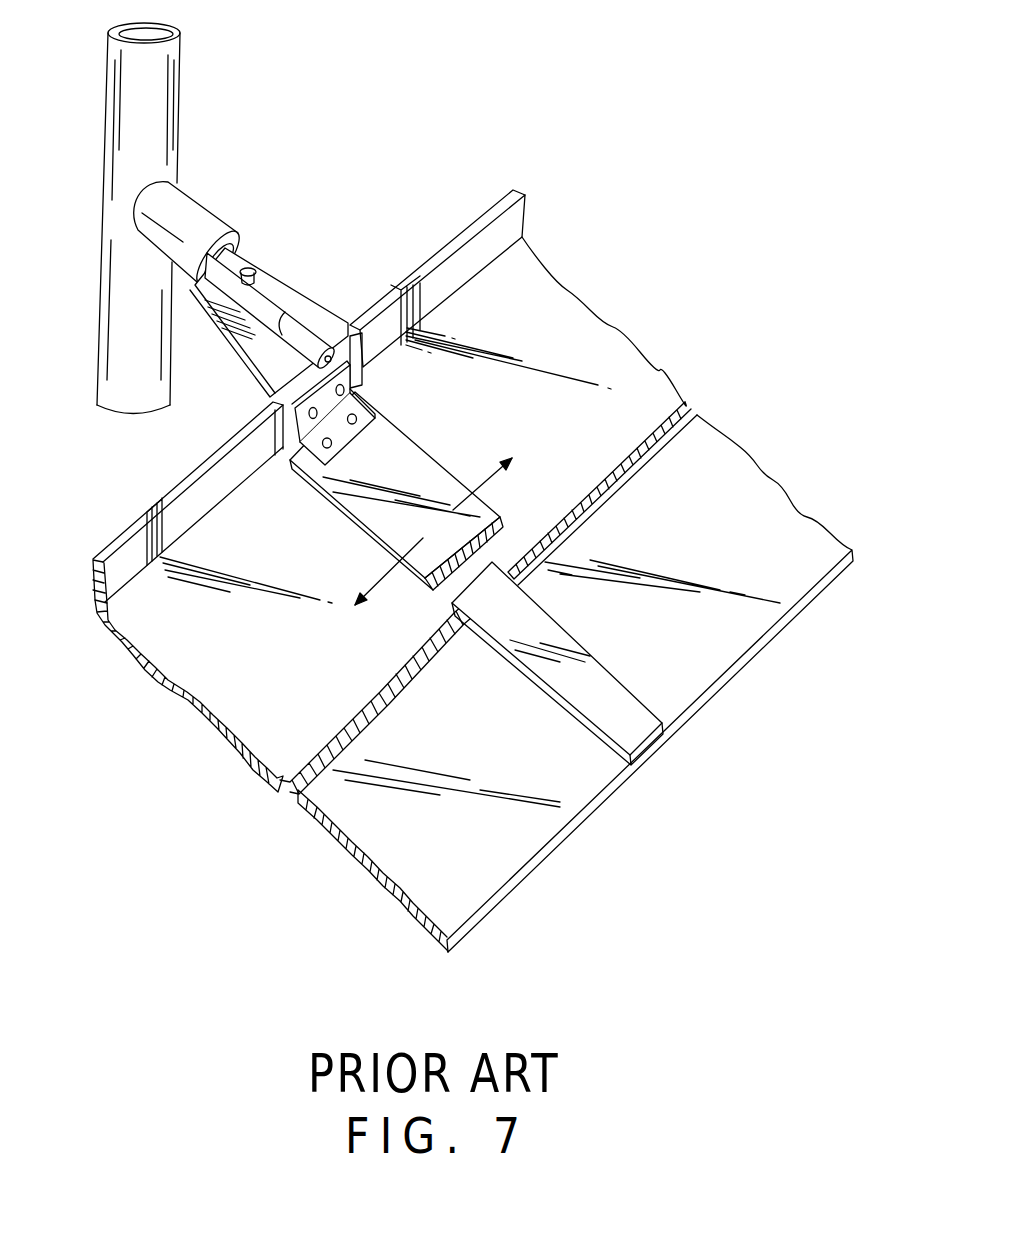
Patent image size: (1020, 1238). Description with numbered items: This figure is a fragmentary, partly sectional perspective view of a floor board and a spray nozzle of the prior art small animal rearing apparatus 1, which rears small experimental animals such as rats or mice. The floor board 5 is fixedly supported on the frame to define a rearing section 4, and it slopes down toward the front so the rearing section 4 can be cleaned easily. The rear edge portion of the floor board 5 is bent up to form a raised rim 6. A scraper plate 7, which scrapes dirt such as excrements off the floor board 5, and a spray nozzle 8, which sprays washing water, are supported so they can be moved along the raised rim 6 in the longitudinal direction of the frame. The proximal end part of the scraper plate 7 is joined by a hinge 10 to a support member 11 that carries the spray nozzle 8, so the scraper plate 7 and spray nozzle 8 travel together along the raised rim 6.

The small animal rearing apparatus 1 is at (327, 148).
The rearing section 4 is at (565, 280).
The floor board 5 is at (630, 407).
The raised rim 6 is at (207, 492).
The scraper plate 7 is at (378, 517).
The spray nozzle 8 is at (266, 296).
The hinge 10 is at (340, 430).
The support member 11 is at (322, 313).